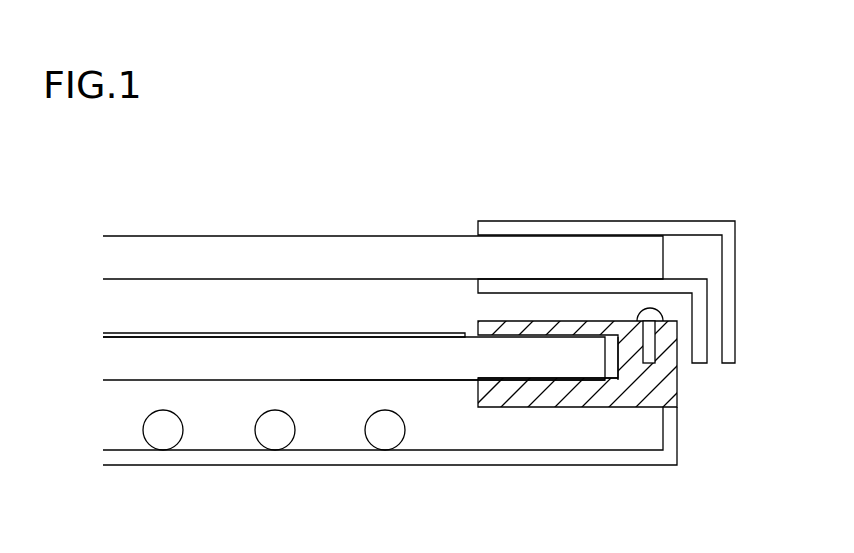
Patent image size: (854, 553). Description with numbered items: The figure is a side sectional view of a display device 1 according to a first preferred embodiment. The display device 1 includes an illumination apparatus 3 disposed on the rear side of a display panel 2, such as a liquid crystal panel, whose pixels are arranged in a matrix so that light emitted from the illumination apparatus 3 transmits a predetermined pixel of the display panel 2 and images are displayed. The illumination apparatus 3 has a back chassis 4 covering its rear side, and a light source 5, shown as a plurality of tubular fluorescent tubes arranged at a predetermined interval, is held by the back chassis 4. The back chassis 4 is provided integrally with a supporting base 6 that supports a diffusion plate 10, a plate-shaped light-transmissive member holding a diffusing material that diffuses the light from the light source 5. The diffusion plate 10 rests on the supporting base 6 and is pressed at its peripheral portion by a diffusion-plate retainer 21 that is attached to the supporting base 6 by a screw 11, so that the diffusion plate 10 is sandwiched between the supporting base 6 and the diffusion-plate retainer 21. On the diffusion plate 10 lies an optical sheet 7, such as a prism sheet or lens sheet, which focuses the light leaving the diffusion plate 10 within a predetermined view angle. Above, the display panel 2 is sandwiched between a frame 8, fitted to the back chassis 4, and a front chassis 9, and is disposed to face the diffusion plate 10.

The display device 1 is at (402, 172).
The display panel 2 is at (277, 247).
The illumination apparatus 3 is at (113, 363).
The back chassis 4 is at (677, 416).
The light source 5 is at (277, 440).
The supporting base 6 is at (528, 395).
The optical sheet 7 is at (199, 333).
The frame 8 is at (707, 284).
The front chassis 9 is at (735, 235).
The diffusion plate 10 is at (445, 367).
The screw 11 is at (649, 345).
The diffusion-plate retainer 21 is at (492, 318).